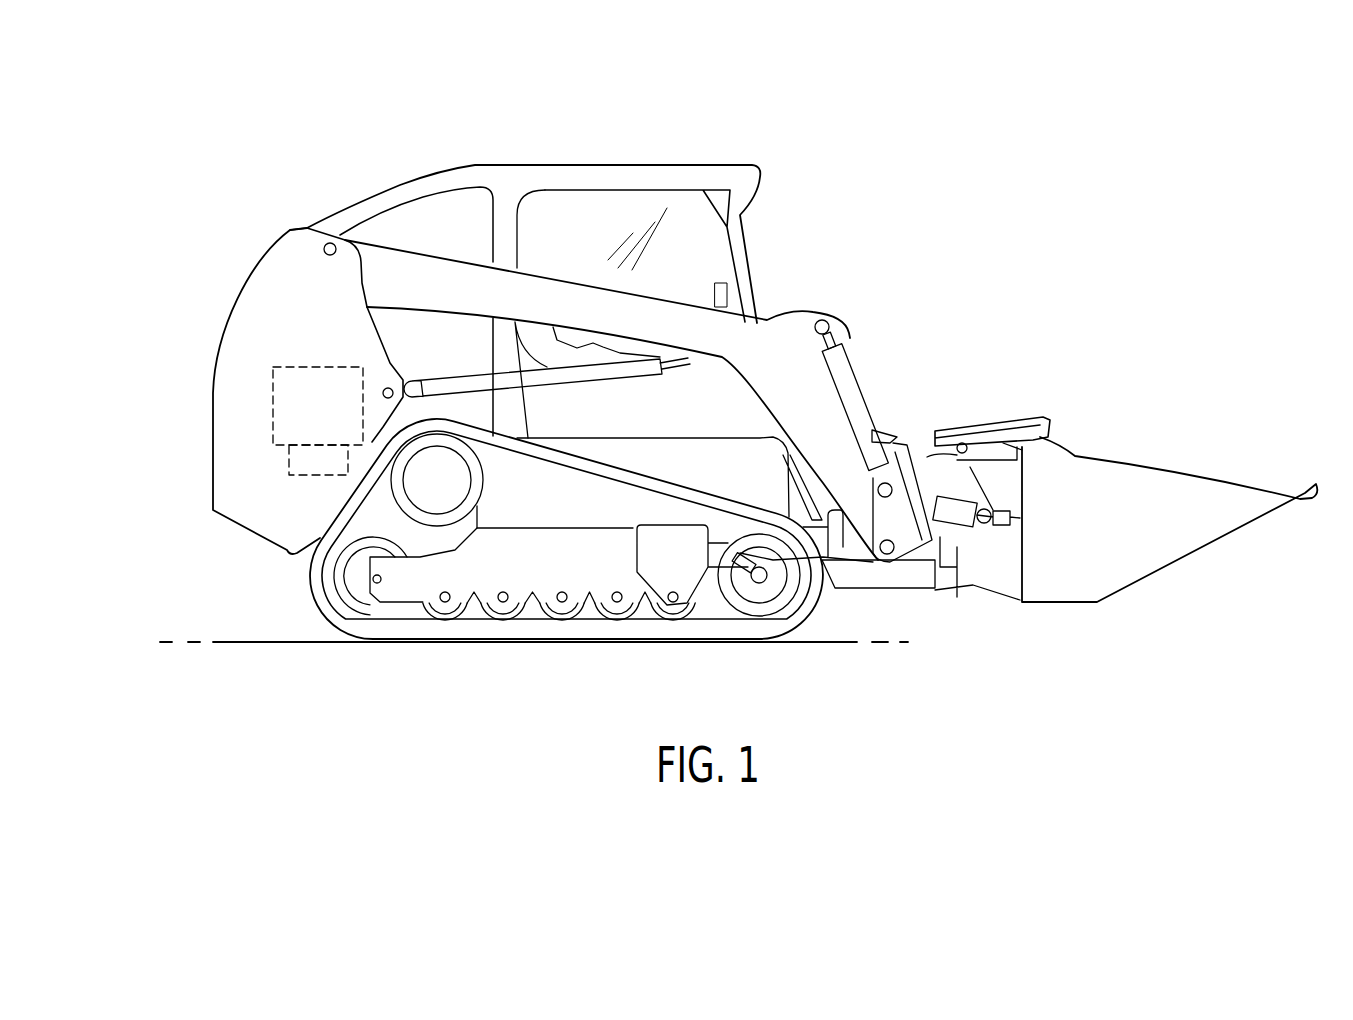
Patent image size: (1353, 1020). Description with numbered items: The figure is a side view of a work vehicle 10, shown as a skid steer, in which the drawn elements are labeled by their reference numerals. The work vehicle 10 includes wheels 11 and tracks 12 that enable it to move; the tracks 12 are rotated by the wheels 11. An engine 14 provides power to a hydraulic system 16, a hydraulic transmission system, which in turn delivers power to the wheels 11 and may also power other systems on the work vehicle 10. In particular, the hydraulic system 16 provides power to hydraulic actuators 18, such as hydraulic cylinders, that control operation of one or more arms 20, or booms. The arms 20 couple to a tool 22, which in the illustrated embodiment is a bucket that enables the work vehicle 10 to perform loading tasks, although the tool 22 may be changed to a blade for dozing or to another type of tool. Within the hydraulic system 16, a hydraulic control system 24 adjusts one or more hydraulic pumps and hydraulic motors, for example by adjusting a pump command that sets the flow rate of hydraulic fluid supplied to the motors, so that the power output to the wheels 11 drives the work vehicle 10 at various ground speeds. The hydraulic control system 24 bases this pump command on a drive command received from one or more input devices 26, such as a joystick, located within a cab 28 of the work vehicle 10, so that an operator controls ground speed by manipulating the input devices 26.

The work vehicle 10 is at (732, 397).
The wheels 11 is at (357, 593).
The tracks 12 is at (533, 613).
The engine 14 is at (238, 543).
The hydraulic system 16 is at (297, 367).
The hydraulic actuators 18 is at (852, 398).
The arms 20 is at (775, 320).
The tool 22 is at (1107, 497).
The hydraulic control system 24 is at (288, 458).
The input devices 26 is at (719, 283).
The cab 28 is at (698, 177).